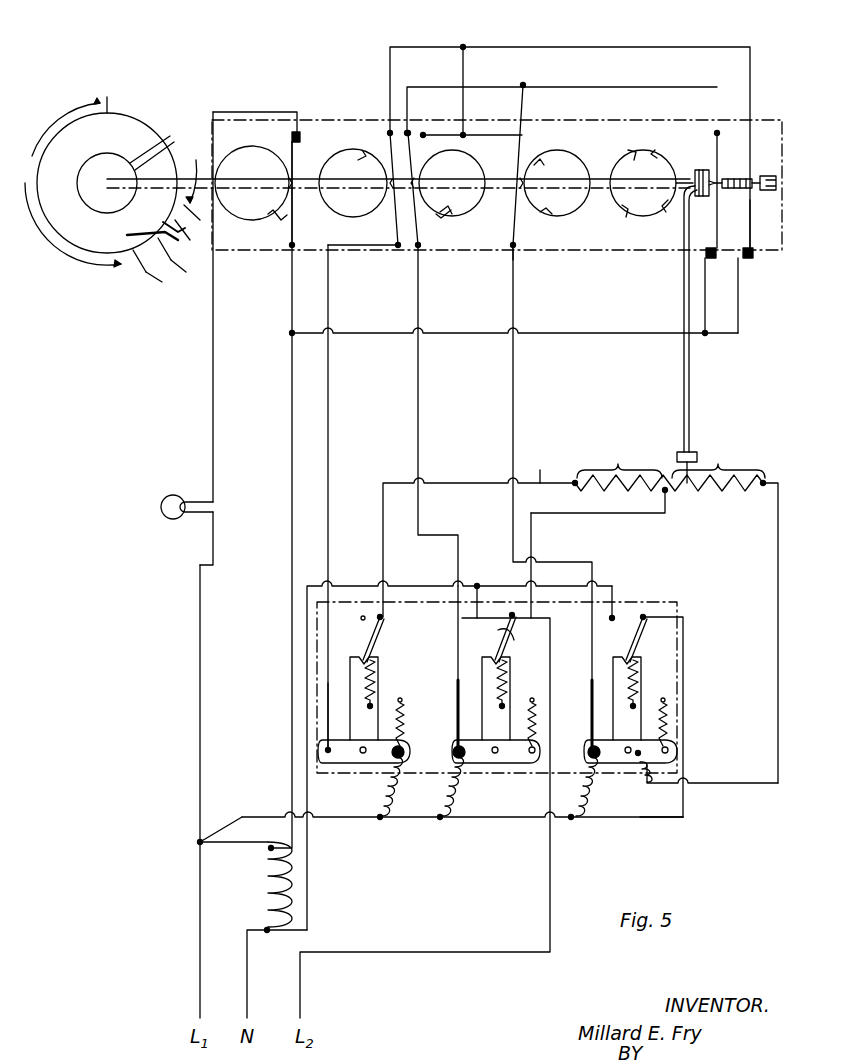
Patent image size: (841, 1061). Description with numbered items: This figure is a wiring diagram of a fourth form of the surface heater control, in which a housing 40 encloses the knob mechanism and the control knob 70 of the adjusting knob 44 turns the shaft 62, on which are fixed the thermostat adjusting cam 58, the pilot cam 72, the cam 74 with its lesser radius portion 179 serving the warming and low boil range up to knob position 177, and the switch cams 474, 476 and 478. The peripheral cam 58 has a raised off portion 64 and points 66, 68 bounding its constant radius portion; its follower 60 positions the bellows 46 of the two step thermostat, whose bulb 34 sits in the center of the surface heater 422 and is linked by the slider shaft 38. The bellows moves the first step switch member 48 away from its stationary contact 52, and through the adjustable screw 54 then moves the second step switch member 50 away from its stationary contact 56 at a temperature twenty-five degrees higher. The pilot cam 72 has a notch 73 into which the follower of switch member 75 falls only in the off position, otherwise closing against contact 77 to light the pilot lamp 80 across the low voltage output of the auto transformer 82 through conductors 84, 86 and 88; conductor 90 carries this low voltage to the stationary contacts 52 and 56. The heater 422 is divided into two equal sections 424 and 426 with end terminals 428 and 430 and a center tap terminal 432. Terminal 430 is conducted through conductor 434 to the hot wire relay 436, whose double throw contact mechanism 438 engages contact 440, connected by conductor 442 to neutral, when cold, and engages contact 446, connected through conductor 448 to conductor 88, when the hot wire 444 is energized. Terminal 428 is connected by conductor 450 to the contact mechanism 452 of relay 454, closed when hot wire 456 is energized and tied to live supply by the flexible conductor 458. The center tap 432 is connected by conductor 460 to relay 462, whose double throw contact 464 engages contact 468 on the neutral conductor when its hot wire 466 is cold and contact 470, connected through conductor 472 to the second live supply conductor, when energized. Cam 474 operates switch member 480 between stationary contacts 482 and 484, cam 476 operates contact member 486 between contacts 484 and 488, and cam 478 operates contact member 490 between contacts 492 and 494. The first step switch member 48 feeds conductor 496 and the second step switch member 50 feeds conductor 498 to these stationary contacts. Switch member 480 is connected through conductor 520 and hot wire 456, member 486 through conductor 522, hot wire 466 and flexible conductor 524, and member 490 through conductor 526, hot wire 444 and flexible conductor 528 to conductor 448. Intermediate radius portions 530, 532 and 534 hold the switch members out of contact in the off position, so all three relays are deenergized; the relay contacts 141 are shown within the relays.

The thermostat bulb 34 is at (696, 457).
The slider shaft 38 is at (690, 385).
The timer housing 40 is at (248, 120).
The adjusting knob 44 is at (85, 265).
The bellows or diaphragm 46 is at (704, 168).
The first step switch member 48 is at (722, 180).
The second step switch member 50 is at (752, 246).
The stationary contact 52 is at (708, 246).
The adjustable screw 54 is at (770, 178).
The stationary contact 56 is at (742, 246).
The peripheral cam 58 is at (625, 206).
The follower 60 is at (680, 178).
The shaft 62 is at (600, 176).
The raised off portion 64 is at (666, 220).
The cam point 66 is at (628, 150).
The cam point 68 is at (655, 150).
The control knob 70 is at (138, 150).
The pilot cam 72 is at (245, 218).
The notch 73 is at (276, 214).
The cam 74 is at (330, 162).
The switch member 75 is at (292, 132).
The stationary contact 77 is at (302, 132).
The pilot lamp 80 is at (161, 513).
The auto transformer 82 is at (248, 886).
The conductor 84 is at (290, 736).
The conductor 86 is at (214, 422).
The conductor 88 is at (198, 700).
The conductor 90 is at (610, 333).
The contact 141 is at (362, 746).
The knob position 177 is at (139, 235).
The cam portion of lesser radius 179 is at (159, 220).
The surface heater 422 is at (669, 458).
The heater section 424 is at (612, 464).
The heater section 426 is at (726, 466).
The end terminal 428 is at (542, 482).
The end terminal 430 is at (772, 508).
The center tap terminal 432 is at (672, 501).
The conductor 434 is at (778, 706).
The hot wire relay 436 is at (630, 731).
The double throw contact mechanism 438 is at (633, 658).
The stationary contact 440 is at (613, 616).
The conductor 442 is at (403, 586).
The hot wire 444 is at (590, 712).
The stationary contact 446 is at (655, 615).
The conductor 448 is at (640, 818).
The conductor 450 is at (384, 480).
The snap acting contact mechanism 452 is at (382, 626).
The relay 454 is at (385, 694).
The hot wire 456 is at (328, 682).
The flexible conductor 458 is at (380, 796).
The conductor 460 is at (608, 516).
The relay 462 is at (496, 731).
The double throw snap acting contact mechanism 464 is at (508, 624).
The hot wire element 466 is at (457, 722).
The stationary contact 468 is at (479, 616).
The stationary contact 470 is at (521, 643).
The conductor 472 is at (550, 876).
The cam 474 is at (330, 203).
The cam 476 is at (444, 216).
The cam 478 is at (550, 210).
The switch contact member 480 is at (398, 216).
The stationary contact 482 is at (390, 133).
The stationary contact 484 is at (407, 110).
The contact member 486 is at (418, 250).
The stationary contact 488 is at (423, 132).
The double throw contact member 490 is at (511, 256).
The stationary contact 492 is at (510, 137).
The stationary contact 494 is at (523, 130).
The conductor 496 is at (633, 85).
The conductor 498 is at (617, 47).
The conductor 520 is at (330, 394).
The conductor 522 is at (420, 397).
The flexible conductor 524 is at (438, 806).
The conductor 526 is at (514, 380).
The flexible conductor 528 is at (586, 752).
The cam portion of intermediate radius 530 is at (380, 200).
The cam portion of intermediate radius 532 is at (450, 152).
The cam portion of intermediate radius 534 is at (540, 160).